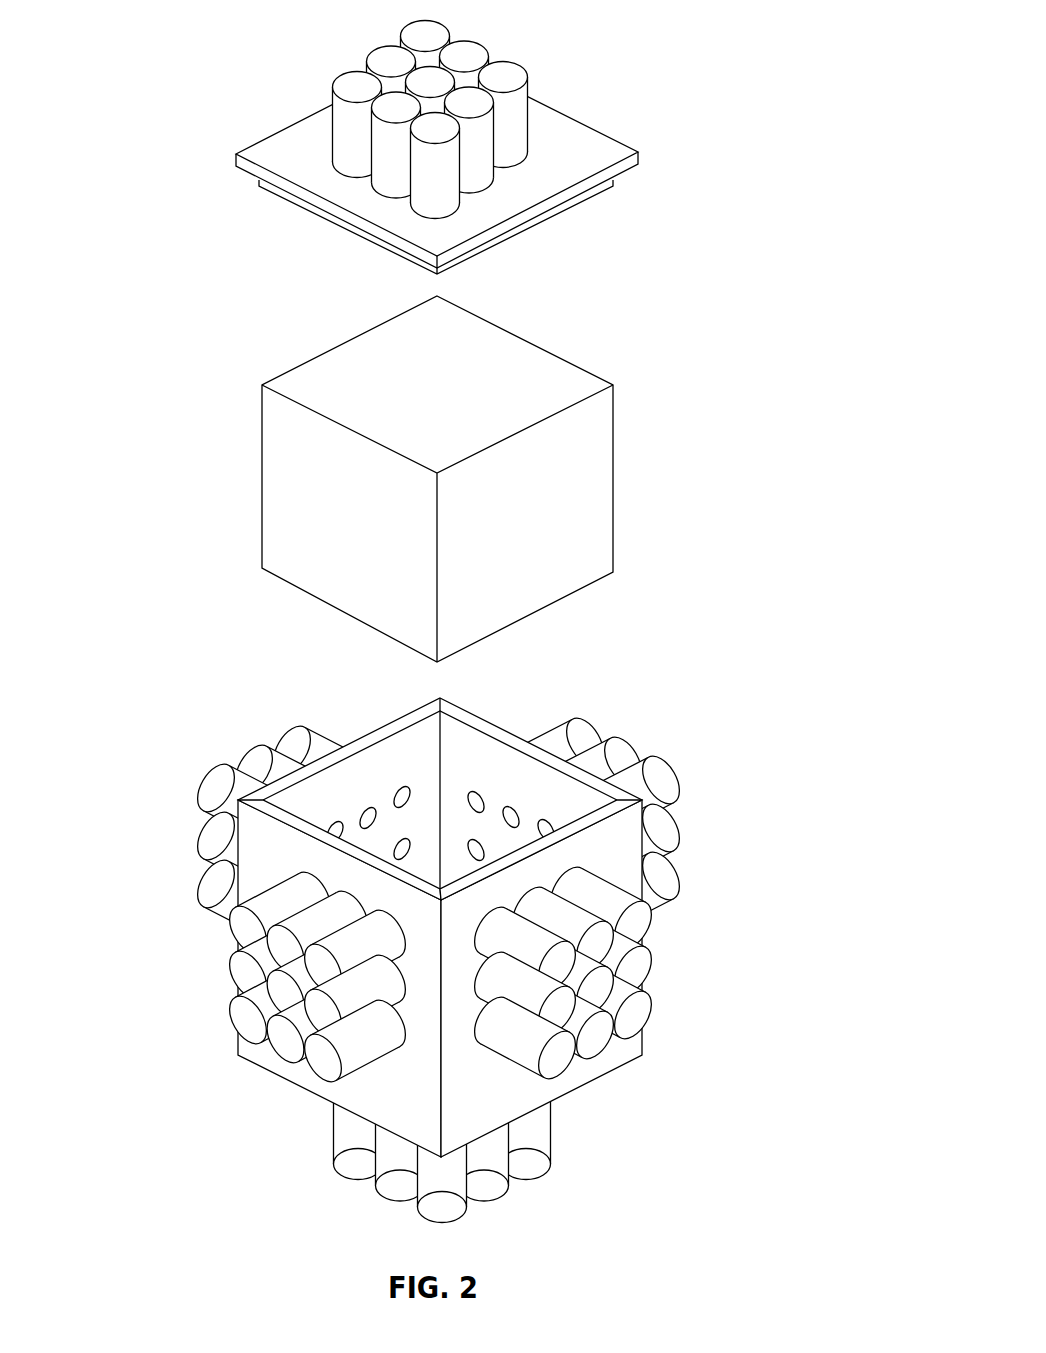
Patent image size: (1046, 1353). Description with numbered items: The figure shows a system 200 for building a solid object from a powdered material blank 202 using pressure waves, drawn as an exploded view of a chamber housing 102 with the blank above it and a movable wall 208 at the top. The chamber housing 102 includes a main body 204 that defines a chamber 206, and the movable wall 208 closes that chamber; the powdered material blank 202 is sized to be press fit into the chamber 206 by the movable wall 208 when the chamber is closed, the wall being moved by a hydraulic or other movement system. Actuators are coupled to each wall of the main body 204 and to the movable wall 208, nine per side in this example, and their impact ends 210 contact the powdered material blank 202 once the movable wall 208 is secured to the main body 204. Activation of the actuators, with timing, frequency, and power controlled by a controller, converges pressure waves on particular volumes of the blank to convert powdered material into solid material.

The system 200 is at (120, 58).
The chamber housing 102 is at (505, 679).
The powdered material blank 202 is at (478, 409).
The main body 204 is at (412, 1092).
The chamber 206 is at (432, 786).
The movable wall 208 is at (570, 132).
The impact ends 210 is at (404, 795).